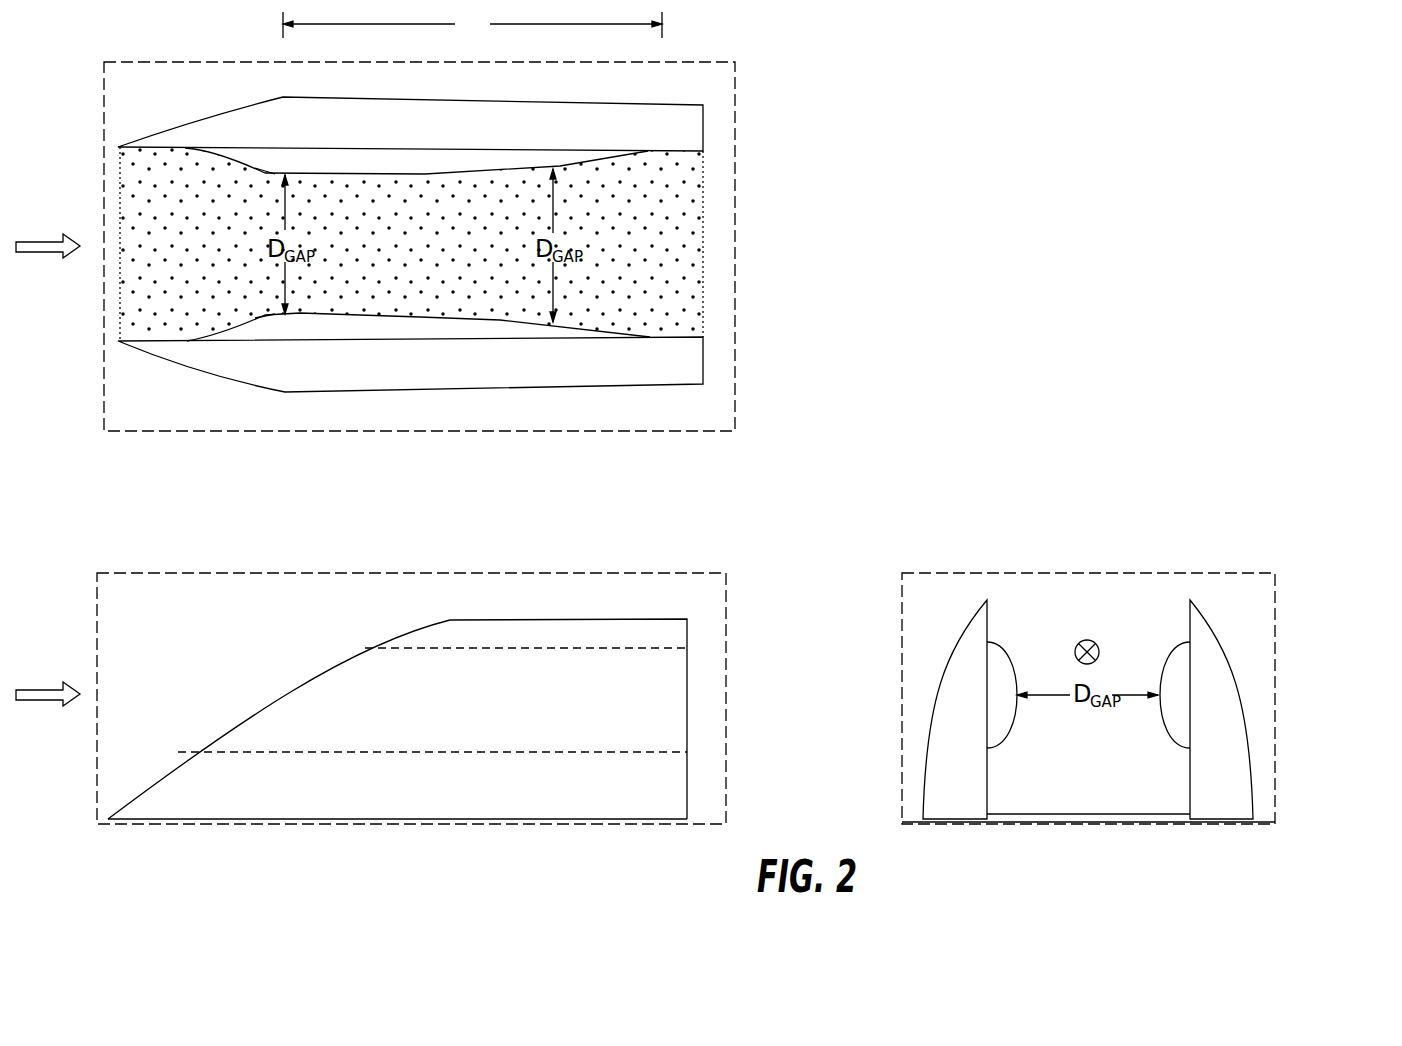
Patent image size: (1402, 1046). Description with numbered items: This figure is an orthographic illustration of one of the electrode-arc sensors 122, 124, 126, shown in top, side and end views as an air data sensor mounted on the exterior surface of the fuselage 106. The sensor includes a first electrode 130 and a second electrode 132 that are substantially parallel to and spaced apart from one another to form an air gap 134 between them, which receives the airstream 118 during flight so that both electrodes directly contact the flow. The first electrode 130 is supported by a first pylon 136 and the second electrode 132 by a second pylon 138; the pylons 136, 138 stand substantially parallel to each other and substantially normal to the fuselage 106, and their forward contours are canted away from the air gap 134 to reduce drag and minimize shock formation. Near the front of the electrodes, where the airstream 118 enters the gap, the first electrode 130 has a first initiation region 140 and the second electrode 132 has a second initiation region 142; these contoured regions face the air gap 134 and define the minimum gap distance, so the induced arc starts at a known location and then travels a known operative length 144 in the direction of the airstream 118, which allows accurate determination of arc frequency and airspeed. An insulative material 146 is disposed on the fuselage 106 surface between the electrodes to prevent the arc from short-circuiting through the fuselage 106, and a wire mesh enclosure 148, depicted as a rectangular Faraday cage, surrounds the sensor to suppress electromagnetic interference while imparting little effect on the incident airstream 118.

The fuselage 106 is at (216, 52).
The airstream 118 is at (1089, 639).
The electrode-arc sensor 122 is at (742, 443).
The electrode-arc sensor 124 is at (742, 443).
The electrode-arc sensor 126 is at (815, 100).
The first electrode 130 is at (426, 303).
The second electrode 132 is at (425, 184).
The air gap 134 is at (393, 244).
The first pylon 136 is at (557, 385).
The second pylon 138 is at (514, 112).
The first initiation region 140 is at (262, 314).
The second initiation region 142 is at (263, 175).
The known operative length 144 is at (472, 25).
The insulative material 146 is at (680, 253).
The wire mesh enclosure 148 is at (180, 432).